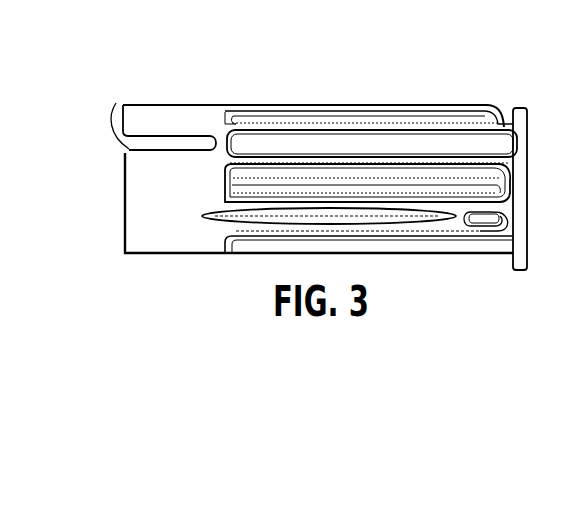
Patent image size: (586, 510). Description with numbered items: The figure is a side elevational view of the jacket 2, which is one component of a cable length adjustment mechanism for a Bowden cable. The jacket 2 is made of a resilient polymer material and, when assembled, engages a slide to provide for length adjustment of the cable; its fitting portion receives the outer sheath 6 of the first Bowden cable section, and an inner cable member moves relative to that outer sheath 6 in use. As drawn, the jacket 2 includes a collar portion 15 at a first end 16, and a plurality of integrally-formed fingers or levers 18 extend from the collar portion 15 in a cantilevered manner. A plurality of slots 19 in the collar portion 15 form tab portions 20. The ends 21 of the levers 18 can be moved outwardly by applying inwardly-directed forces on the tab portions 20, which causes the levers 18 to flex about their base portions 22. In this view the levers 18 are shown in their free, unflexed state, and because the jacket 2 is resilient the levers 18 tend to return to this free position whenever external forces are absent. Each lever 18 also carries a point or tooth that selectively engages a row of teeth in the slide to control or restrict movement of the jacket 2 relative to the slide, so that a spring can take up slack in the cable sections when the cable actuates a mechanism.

The jacket 2 is at (475, 104).
The outer sheath 6 is at (507, 191).
The collar portion 15 is at (168, 246).
The first end 16 is at (164, 105).
The levers 18 is at (443, 105).
The slots 19 is at (116, 102).
The tab portions 20 is at (142, 117).
The ends of levers 21 is at (494, 108).
The base portions of levers 22 is at (226, 105).